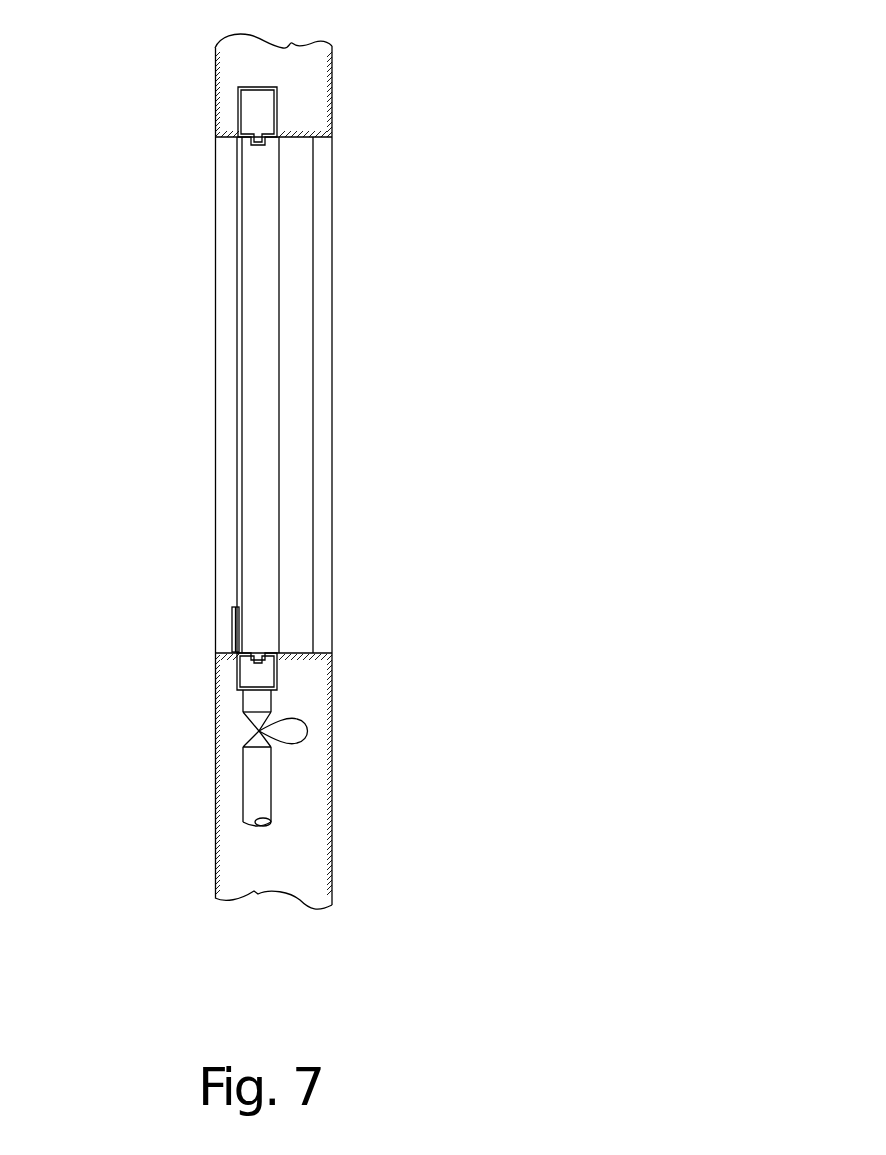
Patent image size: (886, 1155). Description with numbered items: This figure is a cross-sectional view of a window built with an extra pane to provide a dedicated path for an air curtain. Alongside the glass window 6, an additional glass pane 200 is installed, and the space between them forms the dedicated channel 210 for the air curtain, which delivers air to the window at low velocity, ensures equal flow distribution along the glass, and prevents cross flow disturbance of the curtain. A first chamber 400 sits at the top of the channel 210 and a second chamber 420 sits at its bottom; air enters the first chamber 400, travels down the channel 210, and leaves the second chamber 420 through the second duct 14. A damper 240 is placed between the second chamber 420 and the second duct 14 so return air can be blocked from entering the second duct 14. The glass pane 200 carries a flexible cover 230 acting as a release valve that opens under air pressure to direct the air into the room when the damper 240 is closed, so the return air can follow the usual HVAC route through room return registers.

The first chamber 400 is at (255, 108).
The dedicated channel 210 is at (257, 303).
The glass window 6 is at (300, 350).
The additional glass pane 200 is at (242, 451).
The flexible cover 230 is at (233, 634).
The second chamber 420 is at (257, 672).
The damper 240 is at (300, 731).
The second duct 14 is at (258, 796).